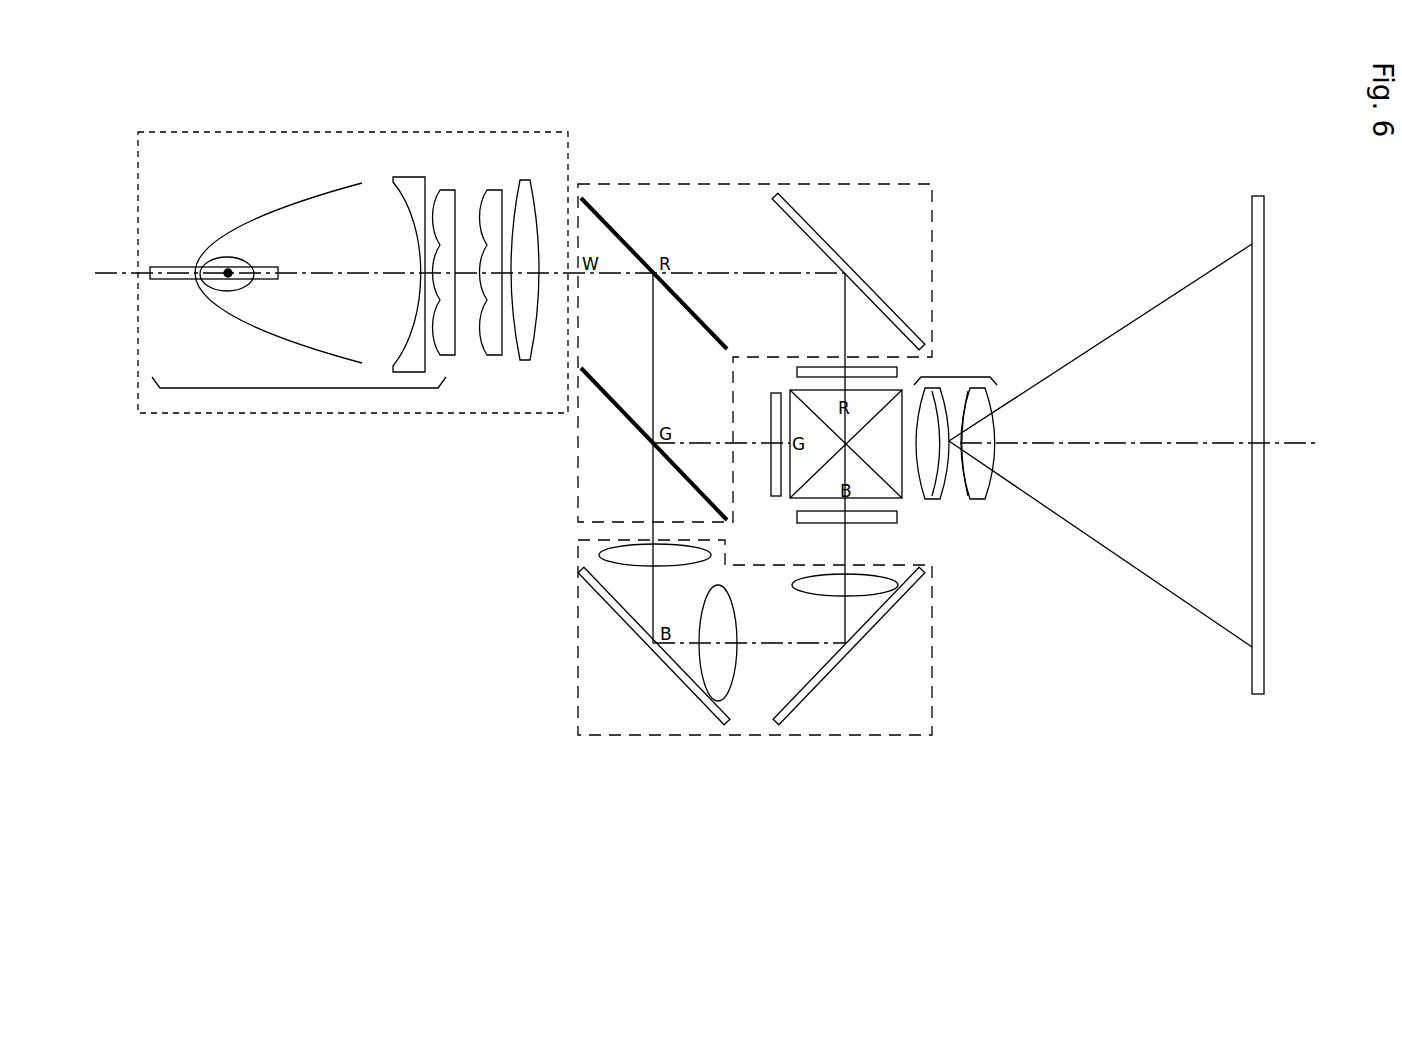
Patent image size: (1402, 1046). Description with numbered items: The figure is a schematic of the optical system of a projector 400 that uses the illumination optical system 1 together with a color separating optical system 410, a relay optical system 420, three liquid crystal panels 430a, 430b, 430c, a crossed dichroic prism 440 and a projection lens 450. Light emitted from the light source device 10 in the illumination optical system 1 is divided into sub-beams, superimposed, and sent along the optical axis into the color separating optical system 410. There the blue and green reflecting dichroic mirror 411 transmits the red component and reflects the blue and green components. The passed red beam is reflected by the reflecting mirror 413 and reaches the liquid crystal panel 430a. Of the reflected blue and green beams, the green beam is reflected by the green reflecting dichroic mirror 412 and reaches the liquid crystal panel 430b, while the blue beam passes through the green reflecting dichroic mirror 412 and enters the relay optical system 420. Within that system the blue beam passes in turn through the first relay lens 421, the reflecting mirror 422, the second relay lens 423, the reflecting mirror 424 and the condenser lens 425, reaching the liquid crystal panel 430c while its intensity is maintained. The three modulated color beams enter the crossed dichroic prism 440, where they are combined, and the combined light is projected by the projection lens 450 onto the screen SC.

The illumination optical system 1 is at (528, 132).
The light source device 10 is at (355, 388).
The projector 400 is at (997, 132).
The color separating optical system 410 is at (900, 184).
The blue and green reflecting dichroic mirror 411 is at (618, 228).
The green reflecting dichroic mirror 412 is at (610, 400).
The reflecting mirror 413 is at (838, 258).
The relay optical system 420 is at (578, 690).
The first relay lens 421 is at (600, 556).
The reflecting mirror 422 is at (600, 595).
The second relay lens 423 is at (730, 692).
The reflecting mirror 424 is at (838, 662).
The condenser lens 425 is at (820, 590).
The liquid crystal panel 430a is at (898, 372).
The liquid crystal panel 430b is at (770, 407).
The liquid crystal panel 430c is at (898, 522).
The crossed dichroic prism 440 is at (903, 500).
The projection lens 450 is at (980, 380).
The screen SC is at (1252, 608).